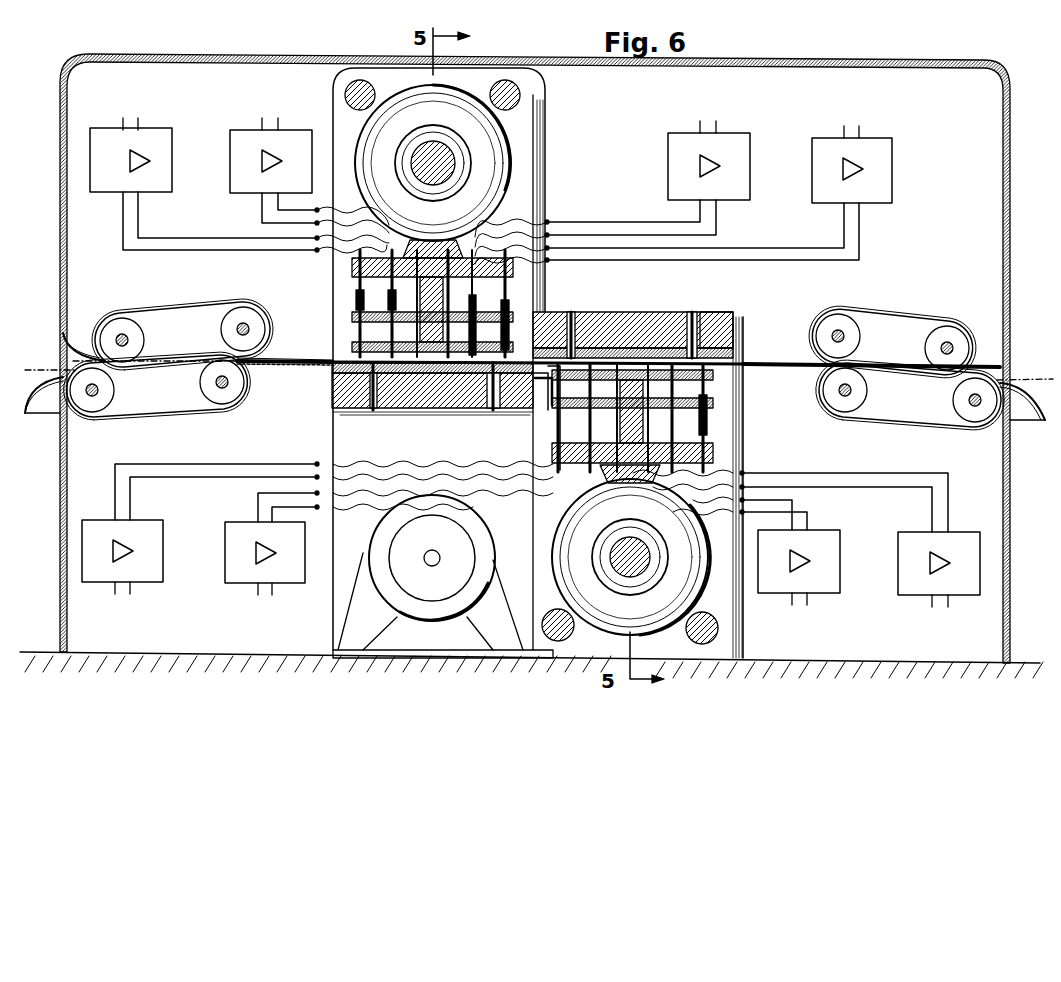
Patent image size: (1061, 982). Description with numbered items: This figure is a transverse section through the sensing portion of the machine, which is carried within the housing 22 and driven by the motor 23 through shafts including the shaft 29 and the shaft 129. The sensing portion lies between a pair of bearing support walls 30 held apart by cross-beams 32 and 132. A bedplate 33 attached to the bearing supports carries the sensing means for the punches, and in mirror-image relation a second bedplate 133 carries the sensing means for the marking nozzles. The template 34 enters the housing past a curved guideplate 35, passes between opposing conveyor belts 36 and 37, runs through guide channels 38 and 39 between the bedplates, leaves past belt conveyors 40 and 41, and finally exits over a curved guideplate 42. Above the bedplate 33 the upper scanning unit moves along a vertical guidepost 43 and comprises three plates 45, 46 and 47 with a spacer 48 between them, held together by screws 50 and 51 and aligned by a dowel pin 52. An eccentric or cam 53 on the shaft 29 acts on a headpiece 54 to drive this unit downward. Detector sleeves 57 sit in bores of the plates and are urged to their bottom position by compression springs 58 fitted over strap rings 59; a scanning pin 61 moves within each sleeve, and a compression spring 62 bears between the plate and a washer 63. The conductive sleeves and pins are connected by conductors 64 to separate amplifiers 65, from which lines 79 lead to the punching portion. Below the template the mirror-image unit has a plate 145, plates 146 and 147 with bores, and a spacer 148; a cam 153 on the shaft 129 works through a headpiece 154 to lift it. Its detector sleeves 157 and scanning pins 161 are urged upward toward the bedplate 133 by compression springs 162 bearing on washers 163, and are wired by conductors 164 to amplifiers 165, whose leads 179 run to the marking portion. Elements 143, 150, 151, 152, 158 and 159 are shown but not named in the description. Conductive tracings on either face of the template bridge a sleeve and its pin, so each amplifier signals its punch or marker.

The housing 22 is at (268, 58).
The motor 23 is at (462, 535).
The shaft 29 is at (448, 170).
The bearing support walls 30 is at (333, 440).
The cross-beam 32 is at (352, 100).
The bedplate 33 is at (438, 395).
The template 34 is at (188, 358).
The curved guideplate 35 is at (48, 377).
The conveyor belt 36 is at (178, 312).
The conveyor belt 37 is at (172, 414).
The guide channel 38 is at (262, 364).
The guide channel 39 is at (778, 360).
The belt conveyor 40 is at (900, 326).
The belt conveyor 41 is at (906, 422).
The curved guideplate 42 is at (1035, 405).
The vertical guidepost 43 is at (415, 385).
The plate 45 is at (352, 265).
The plate 46 is at (390, 305).
The plate 47 is at (352, 347).
The spacer 48 is at (508, 300).
The screw 50 is at (480, 210).
The screw 51 is at (455, 380).
The dowel pin 52 is at (395, 400).
The eccentric or cam 53 is at (505, 125).
The headpiece 54 is at (418, 238).
The detector sleeves 57 is at (358, 295).
The compression springs 58 is at (333, 345).
The strap rings 59 is at (510, 322).
The scanning pin 61 is at (352, 317).
The compression spring 62 is at (478, 292).
The washer or ring 63 is at (455, 297).
The conductors 64 is at (200, 250).
The amplifier 65 is at (230, 155).
The lines 79 is at (138, 128).
The shaft 129 is at (618, 548).
The cross-beam 132 is at (550, 615).
The bedplate 133 is at (650, 330).
The pin 143 is at (648, 330).
The plate 145 is at (712, 455).
The plate 146 is at (715, 405).
The plate 147 is at (715, 378).
The spacer 148 is at (655, 440).
The cam block 150 is at (600, 480).
The pin 151 is at (615, 330).
The block portion 152 is at (655, 335).
The eccentric or cam 153 is at (690, 595).
The headpiece 154 is at (645, 478).
The detector sleeves 157 is at (710, 392).
The spacer 158 is at (552, 395).
The spacer 159 is at (545, 392).
The scanning pins 161 is at (660, 435).
The compression springs 162 is at (570, 458).
The strap rings or washers 163 is at (556, 440).
The conductors 164 is at (198, 468).
The amplifiers 165 is at (225, 555).
The leads 179 is at (130, 590).